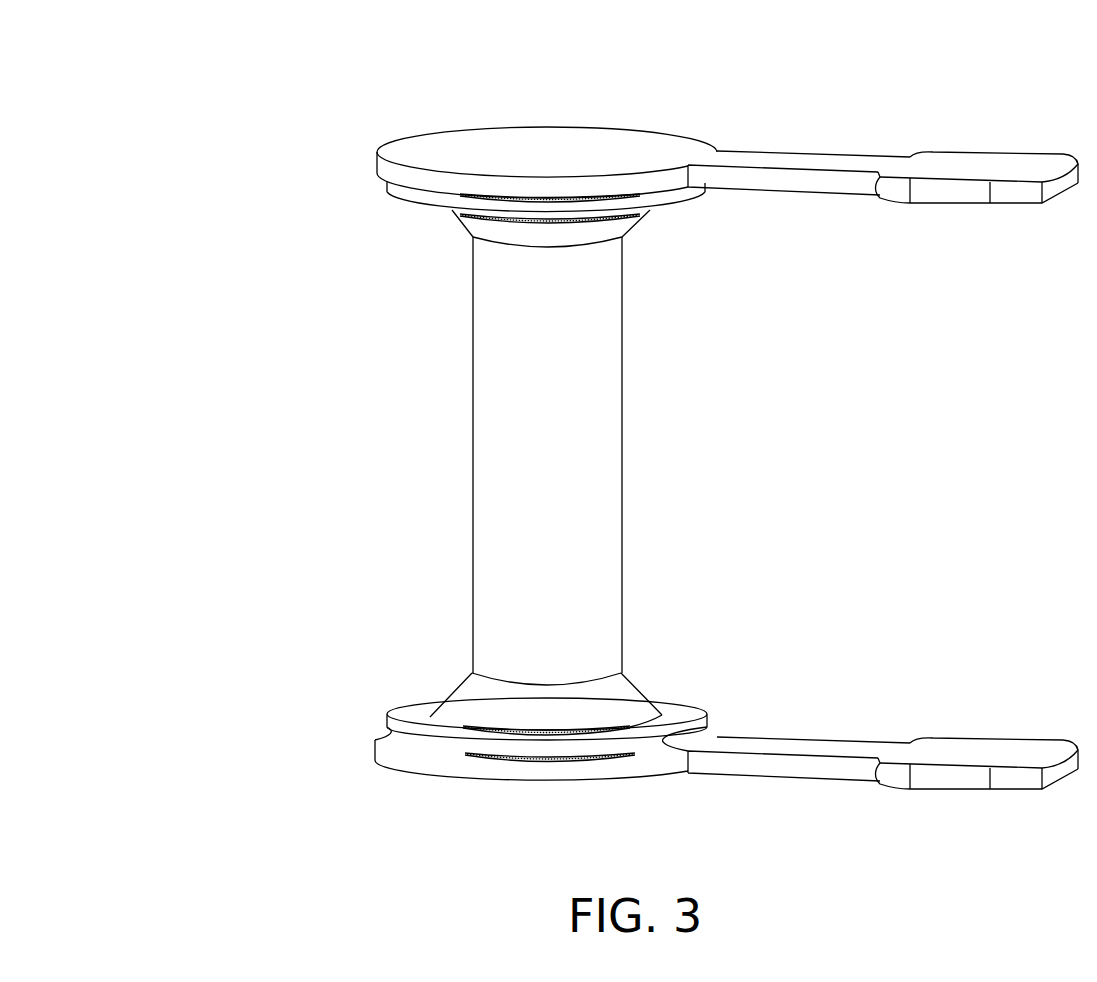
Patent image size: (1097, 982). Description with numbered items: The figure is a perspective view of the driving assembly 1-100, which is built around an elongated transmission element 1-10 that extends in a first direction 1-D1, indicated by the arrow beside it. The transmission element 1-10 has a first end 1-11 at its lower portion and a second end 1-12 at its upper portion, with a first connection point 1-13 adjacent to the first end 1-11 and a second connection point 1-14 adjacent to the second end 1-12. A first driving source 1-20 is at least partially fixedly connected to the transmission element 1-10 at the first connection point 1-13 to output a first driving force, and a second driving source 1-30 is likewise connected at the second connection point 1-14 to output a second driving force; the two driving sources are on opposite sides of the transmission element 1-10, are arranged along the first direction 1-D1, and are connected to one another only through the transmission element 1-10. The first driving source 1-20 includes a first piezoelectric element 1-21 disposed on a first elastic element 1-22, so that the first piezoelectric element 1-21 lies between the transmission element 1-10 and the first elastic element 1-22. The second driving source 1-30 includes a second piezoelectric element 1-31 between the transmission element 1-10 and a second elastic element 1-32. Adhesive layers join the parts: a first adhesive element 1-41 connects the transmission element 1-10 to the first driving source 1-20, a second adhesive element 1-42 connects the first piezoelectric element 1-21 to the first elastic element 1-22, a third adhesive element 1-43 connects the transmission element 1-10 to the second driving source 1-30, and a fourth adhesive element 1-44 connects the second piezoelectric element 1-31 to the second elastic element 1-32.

The driving assembly 1-100 is at (93, 57).
The transmission element 1-10 is at (603, 443).
The first end 1-11 is at (675, 712).
The second end 1-12 is at (650, 210).
The first connection point 1-13 is at (663, 717).
The second connection point 1-14 is at (651, 212).
The first driving source 1-20 is at (147, 373).
The first piezoelectric element 1-21 is at (705, 733).
The first elastic element 1-22 is at (653, 768).
The second driving source 1-30 is at (147, 470).
The second piezoelectric element 1-31 is at (673, 195).
The second elastic element 1-32 is at (643, 147).
The first adhesive element 1-41 is at (500, 720).
The second adhesive element 1-42 is at (500, 763).
The third adhesive element 1-43 is at (510, 217).
The fourth adhesive element 1-44 is at (505, 193).
The first direction 1-D1 is at (323, 400).